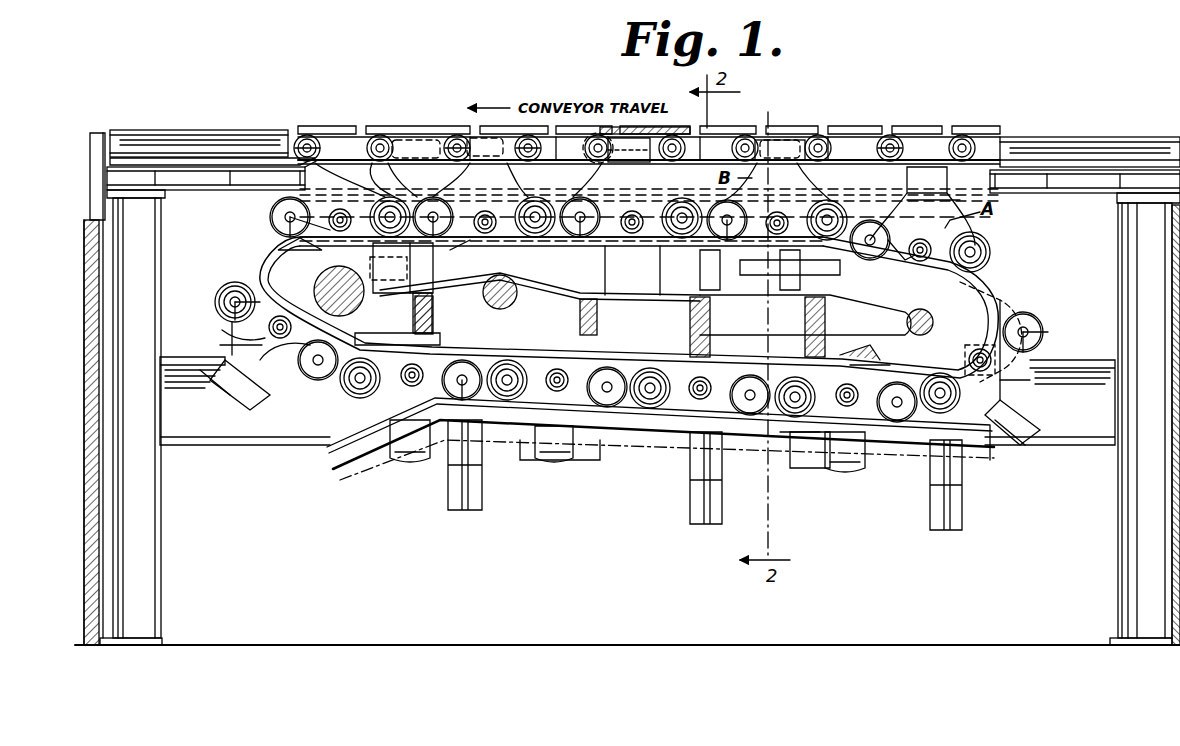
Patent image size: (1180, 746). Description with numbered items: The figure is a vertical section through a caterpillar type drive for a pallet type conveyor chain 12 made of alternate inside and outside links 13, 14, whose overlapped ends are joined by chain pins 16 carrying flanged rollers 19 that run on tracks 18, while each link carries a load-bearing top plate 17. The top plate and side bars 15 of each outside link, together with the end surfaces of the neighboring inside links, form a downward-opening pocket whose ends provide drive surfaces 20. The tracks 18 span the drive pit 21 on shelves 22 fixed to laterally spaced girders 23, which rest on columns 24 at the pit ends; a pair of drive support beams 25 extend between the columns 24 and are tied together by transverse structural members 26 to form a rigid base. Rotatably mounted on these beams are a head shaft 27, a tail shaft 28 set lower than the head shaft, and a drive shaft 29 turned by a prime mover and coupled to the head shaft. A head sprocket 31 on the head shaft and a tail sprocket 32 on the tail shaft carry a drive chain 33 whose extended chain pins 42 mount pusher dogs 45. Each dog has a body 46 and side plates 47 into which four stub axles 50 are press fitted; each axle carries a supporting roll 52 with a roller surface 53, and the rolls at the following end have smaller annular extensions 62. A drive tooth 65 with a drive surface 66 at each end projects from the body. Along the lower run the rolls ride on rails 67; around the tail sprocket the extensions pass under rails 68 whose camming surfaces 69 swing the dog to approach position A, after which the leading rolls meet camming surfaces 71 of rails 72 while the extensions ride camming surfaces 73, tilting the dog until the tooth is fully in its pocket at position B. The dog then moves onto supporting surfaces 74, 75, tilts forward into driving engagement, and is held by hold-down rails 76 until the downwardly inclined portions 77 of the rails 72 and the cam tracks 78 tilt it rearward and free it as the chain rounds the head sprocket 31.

The pallet type conveyor chain 12 is at (342, 126).
The inside link 13 is at (420, 138).
The outside link 14 is at (370, 127).
The side bars 15 is at (775, 140).
The chain pins 16 is at (305, 135).
The top plate 17 is at (413, 126).
The tracks 18 is at (204, 153).
The flanged rollers 19 is at (300, 140).
The drive surfaces 20 is at (629, 150).
The drive pit 21 is at (308, 541).
The shelves 22 is at (198, 180).
The girders 23 is at (152, 140).
The columns 24 is at (148, 508).
The drive support beams 25 is at (252, 445).
The transverse structural members 26 is at (690, 322).
The head shaft 27 is at (318, 286).
The tail shaft 28 is at (945, 298).
The drive shaft 29 is at (490, 306).
The head sprocket 31 is at (285, 244).
The tail sprocket 32 is at (1000, 305).
The drive chain 33 is at (280, 258).
The chain pin 42 is at (282, 318).
The pusher dog 45 is at (505, 238).
The body 46 is at (232, 346).
The side plates 47 is at (225, 335).
The stub axles 50 is at (440, 232).
The supporting roll 52 is at (272, 213).
The roller surface 53 is at (270, 225).
The annular extensions 62 is at (682, 210).
The drive tooth 65 is at (795, 128).
The drive surface 66 is at (910, 176).
The rails 67 is at (620, 445).
The rails 68 is at (965, 348).
The camming surfaces 69 is at (989, 366).
The camming surfaces 71 is at (790, 270).
The rails 72 is at (664, 248).
The camming surfaces 73 is at (900, 245).
The supporting surfaces 74 is at (611, 270).
The supporting surfaces 75 is at (724, 270).
The hold-down rails 76 is at (574, 167).
The downwardly inclined portions 77 is at (397, 294).
The cam tracks 78 is at (362, 172).